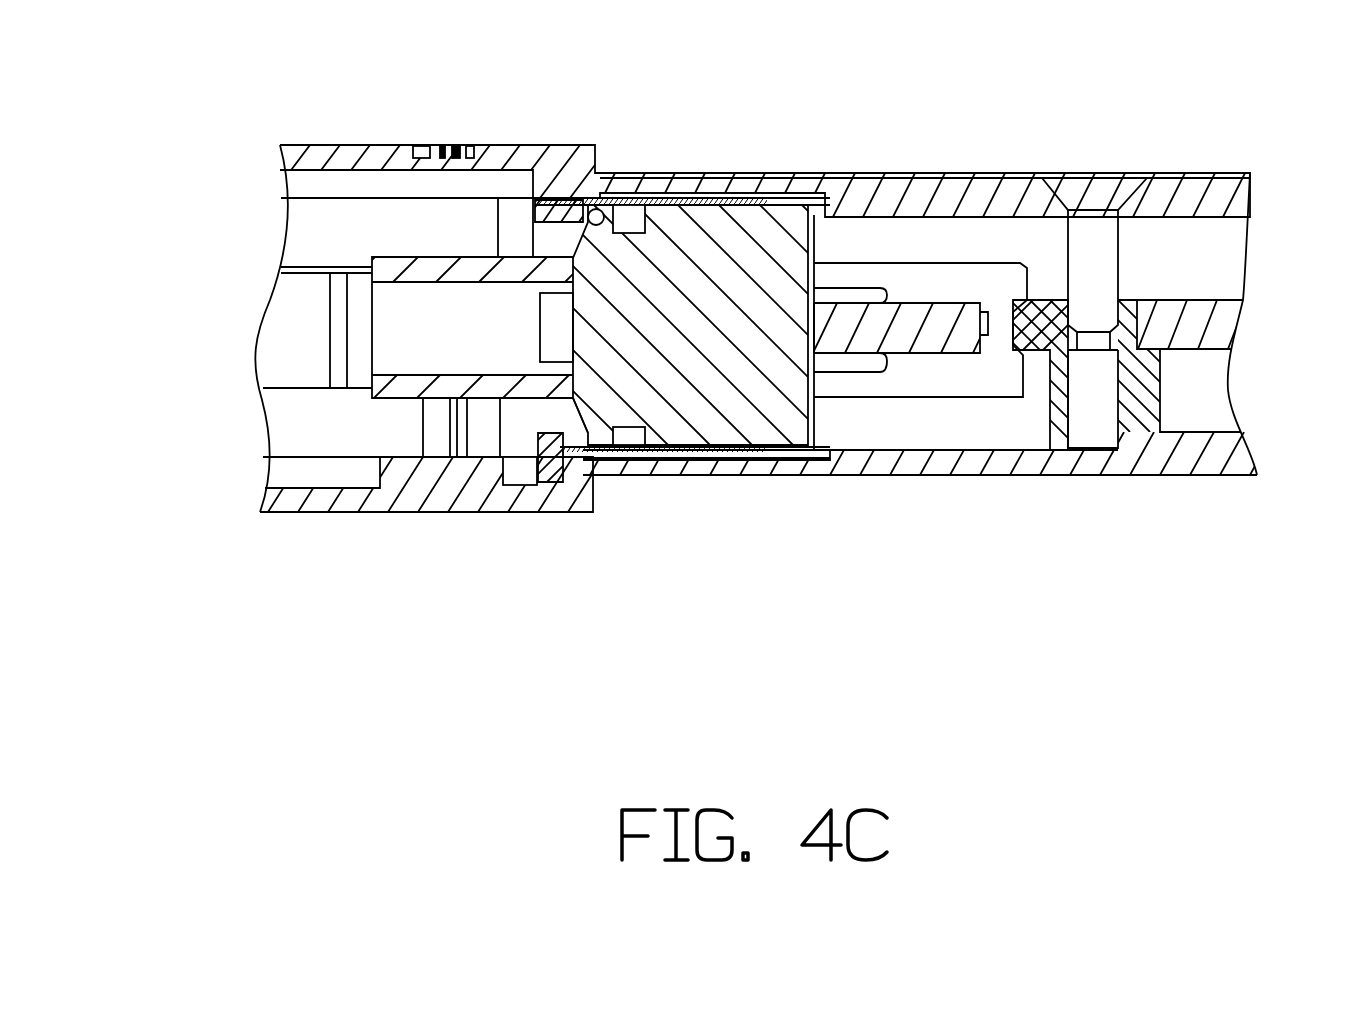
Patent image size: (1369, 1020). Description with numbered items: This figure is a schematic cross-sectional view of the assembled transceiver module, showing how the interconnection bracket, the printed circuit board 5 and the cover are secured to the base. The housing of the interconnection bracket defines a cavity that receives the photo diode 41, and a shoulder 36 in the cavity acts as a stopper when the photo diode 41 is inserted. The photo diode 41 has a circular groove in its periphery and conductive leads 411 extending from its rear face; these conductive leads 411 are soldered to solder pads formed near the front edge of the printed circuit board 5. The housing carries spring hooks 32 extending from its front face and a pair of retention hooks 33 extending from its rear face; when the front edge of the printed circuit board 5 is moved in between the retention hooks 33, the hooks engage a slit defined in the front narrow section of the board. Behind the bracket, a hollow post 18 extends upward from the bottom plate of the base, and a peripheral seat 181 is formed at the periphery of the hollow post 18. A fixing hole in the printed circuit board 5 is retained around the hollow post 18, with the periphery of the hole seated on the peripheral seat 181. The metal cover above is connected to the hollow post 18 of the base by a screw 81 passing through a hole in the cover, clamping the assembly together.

The printed circuit board 5 is at (1197, 300).
The hollow post 18 is at (1048, 418).
The spring hooks 32 is at (292, 338).
The retention hooks 33 is at (1010, 278).
The shoulder 36 is at (615, 228).
The photo diode 41 is at (778, 248).
The screw 81 is at (1120, 268).
The peripheral seat 181 is at (1163, 383).
The conductive leads 411 is at (858, 293).